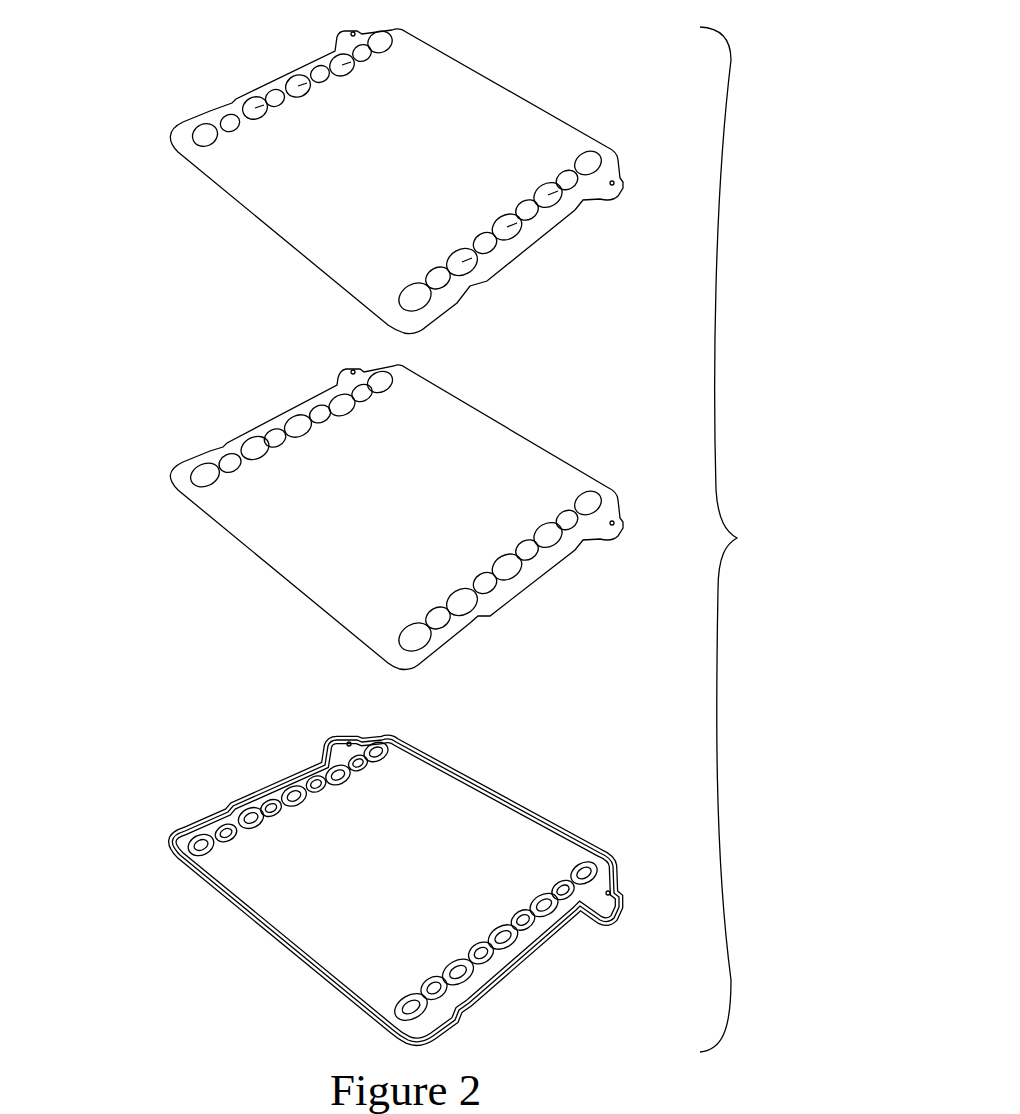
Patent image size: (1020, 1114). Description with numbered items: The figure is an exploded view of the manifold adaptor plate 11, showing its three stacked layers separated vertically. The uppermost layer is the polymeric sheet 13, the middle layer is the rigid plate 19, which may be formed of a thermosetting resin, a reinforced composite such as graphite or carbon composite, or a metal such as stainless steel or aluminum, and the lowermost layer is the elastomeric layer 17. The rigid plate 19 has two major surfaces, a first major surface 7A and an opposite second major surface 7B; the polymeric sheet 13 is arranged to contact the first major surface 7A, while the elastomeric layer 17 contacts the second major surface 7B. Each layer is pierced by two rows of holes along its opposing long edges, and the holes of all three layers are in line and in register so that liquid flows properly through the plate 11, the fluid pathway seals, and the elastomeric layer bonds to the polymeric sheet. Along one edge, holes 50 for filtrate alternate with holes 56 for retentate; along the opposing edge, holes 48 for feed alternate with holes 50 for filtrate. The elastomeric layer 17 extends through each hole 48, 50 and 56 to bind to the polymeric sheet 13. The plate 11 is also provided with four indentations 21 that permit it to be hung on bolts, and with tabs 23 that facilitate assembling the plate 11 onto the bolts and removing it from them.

The manifold adaptor plate 11 is at (743, 539).
The polymeric sheet 13 is at (606, 80).
The rigid plate 19 is at (574, 415).
The elastomeric layer 17 is at (250, 808).
The indentations 21 is at (337, 47).
The tabs 23 is at (330, 752).
The holes for feed 48 is at (387, 43).
The holes for filtrate 50 is at (310, 68).
The hole for retentate 56 is at (590, 163).
The first major surface 7A is at (428, 428).
The second major surface 7B is at (292, 580).